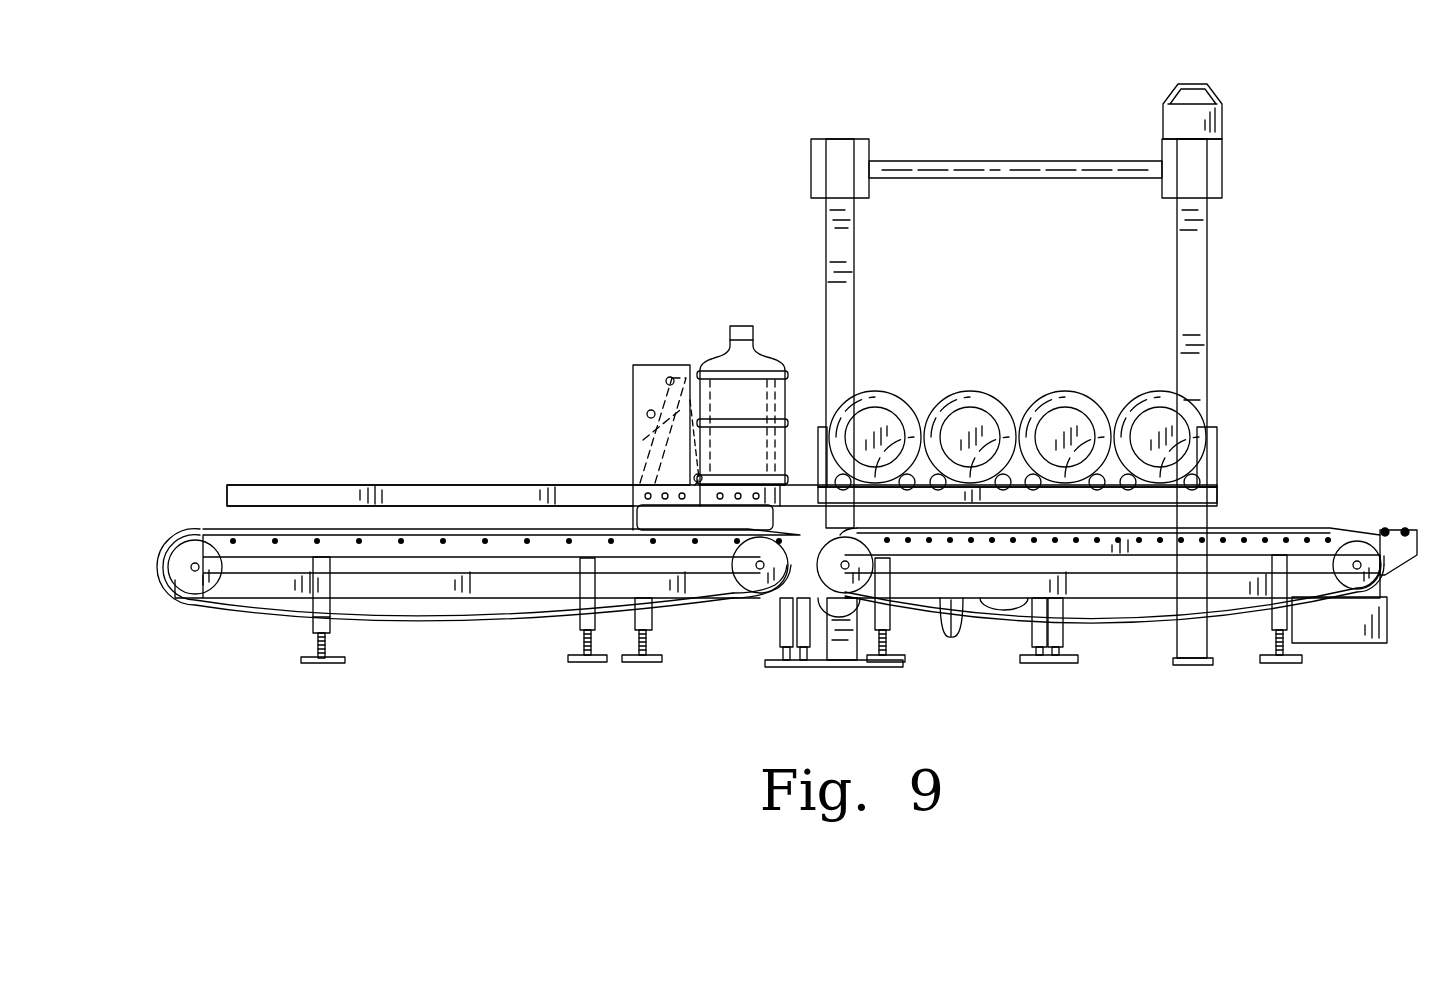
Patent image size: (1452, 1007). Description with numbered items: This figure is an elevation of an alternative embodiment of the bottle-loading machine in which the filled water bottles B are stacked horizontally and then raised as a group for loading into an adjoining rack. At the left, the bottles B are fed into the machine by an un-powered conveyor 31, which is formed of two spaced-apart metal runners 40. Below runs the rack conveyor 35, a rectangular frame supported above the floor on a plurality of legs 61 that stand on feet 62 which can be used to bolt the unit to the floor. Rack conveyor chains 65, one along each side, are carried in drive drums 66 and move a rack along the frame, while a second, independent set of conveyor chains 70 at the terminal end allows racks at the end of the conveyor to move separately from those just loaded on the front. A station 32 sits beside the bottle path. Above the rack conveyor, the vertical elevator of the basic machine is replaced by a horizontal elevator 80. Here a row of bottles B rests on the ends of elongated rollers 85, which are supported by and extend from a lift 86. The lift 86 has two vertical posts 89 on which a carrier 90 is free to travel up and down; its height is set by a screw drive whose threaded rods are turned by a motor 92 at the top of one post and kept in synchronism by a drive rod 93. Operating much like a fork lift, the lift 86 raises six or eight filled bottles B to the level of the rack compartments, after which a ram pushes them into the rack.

The horizontal elevator 80 is at (1028, 338).
The motor 92 is at (1205, 84).
The drive rod 93 is at (1035, 161).
The lift 86 is at (1240, 177).
The vertical posts 89 is at (826, 222).
The carrier 90 is at (1218, 437).
The elongated rollers 85 is at (1218, 490).
The metal runners 40 is at (302, 485).
The un-powered conveyor 31 is at (418, 476).
The drive drums 66 is at (185, 560).
The rack conveyor 35 is at (253, 620).
The rack conveyor chains 65 is at (290, 613).
The legs 61 is at (330, 630).
The feet 62 is at (345, 663).
The bottle handling station 32 is at (740, 522).
The conveyor chains 70 is at (1235, 620).
The bottles B is at (730, 345).